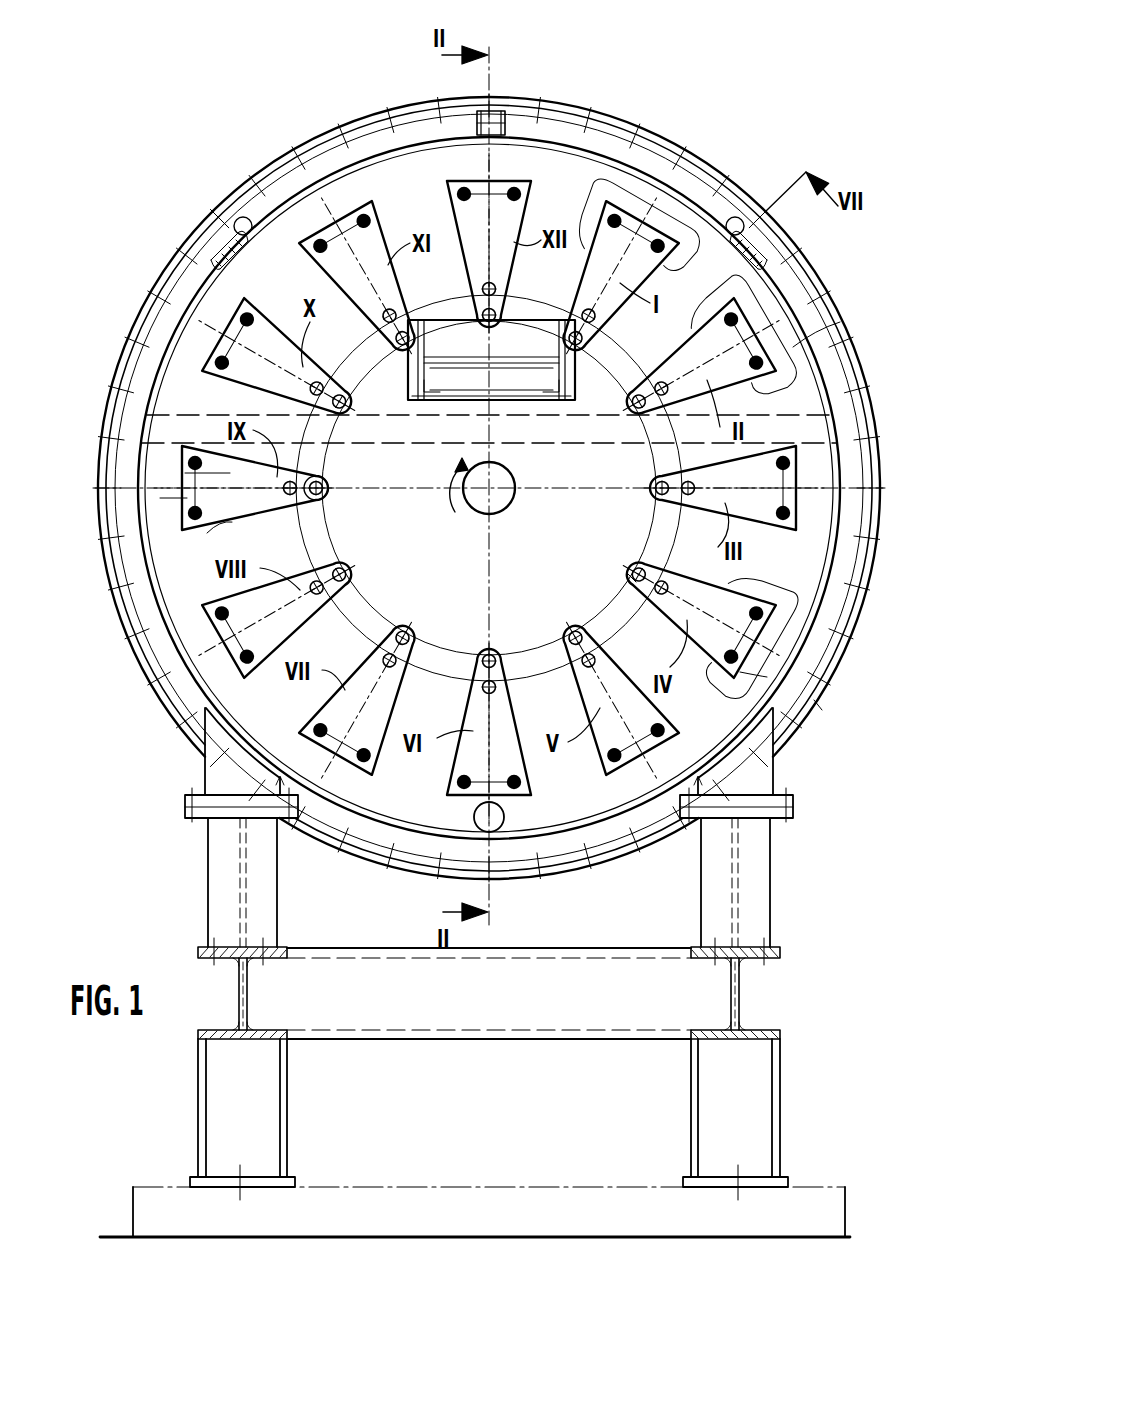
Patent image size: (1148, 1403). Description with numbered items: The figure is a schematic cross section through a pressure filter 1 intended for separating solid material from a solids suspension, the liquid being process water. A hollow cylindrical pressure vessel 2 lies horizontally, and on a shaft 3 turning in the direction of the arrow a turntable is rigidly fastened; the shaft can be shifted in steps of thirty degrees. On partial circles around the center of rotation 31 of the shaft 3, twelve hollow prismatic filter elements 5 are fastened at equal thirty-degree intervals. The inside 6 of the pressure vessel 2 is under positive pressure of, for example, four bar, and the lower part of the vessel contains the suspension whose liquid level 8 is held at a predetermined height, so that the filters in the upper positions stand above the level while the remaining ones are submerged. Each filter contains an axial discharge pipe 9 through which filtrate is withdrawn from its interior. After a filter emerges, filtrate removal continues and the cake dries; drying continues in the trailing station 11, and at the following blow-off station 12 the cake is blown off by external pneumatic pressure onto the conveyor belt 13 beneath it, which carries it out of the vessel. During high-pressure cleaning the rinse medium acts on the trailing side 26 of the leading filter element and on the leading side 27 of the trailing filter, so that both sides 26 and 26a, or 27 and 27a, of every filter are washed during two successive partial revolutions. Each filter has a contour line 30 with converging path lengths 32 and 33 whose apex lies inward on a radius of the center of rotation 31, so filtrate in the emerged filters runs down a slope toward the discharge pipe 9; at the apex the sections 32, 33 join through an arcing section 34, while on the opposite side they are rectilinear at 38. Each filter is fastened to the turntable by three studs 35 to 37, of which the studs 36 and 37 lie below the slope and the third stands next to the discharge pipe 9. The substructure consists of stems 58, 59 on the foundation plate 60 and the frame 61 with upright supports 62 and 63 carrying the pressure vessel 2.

The pressure filter 1 is at (238, 137).
The pressure vessel 2 is at (827, 343).
The shaft 3 is at (505, 498).
The filter elements 5 is at (403, 561).
The inside of the pressure vessel 6 is at (808, 572).
The liquid level 8 is at (848, 443).
The discharge pipe 9 is at (630, 578).
The trailing station 11 is at (347, 178).
The blow-off station 12 is at (547, 146).
The conveyor belt 13 is at (437, 426).
The trailing side 26 is at (767, 268).
The trailing side 26a is at (812, 325).
The leading side 27 is at (680, 225).
The leading side 27a is at (605, 190).
The contour line 30 is at (160, 542).
The center of rotation 31 is at (495, 487).
The converging contour section 32 is at (207, 533).
The converging contour section 33 is at (185, 473).
The curved contour section 34 is at (330, 482).
The stud 35 is at (723, 593).
The stud 36 is at (740, 672).
The stud 37 is at (820, 707).
The rectilinear contour section 38 is at (160, 498).
The stem 58 is at (751, 1128).
The stem 59 is at (258, 1128).
The foundation plate 60 is at (511, 1231).
The frame 61 is at (515, 1016).
The upright support 62 is at (758, 890).
The upright support 63 is at (263, 890).